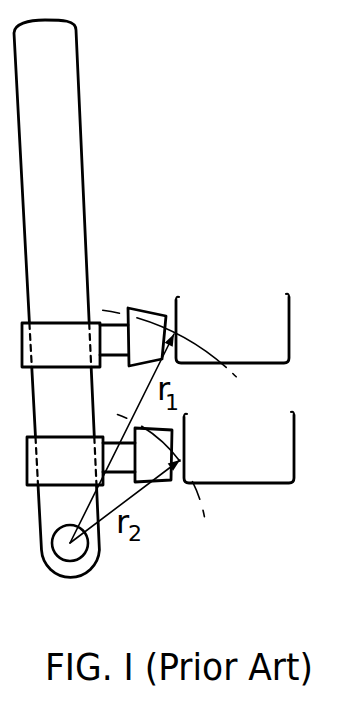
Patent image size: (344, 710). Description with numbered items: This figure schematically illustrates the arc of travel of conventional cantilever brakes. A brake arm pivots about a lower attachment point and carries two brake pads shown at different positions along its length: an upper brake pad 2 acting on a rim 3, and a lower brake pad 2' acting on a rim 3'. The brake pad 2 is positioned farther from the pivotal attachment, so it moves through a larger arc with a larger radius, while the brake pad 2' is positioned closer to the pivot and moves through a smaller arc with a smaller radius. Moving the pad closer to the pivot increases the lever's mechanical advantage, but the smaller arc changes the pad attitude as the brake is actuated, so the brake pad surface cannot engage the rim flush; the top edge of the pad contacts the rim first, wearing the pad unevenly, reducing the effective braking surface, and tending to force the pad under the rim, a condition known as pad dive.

The brake pad 2 is at (133, 282).
The rim 3 is at (225, 292).
The brake pad 2' is at (145, 515).
The rim 3' is at (232, 493).